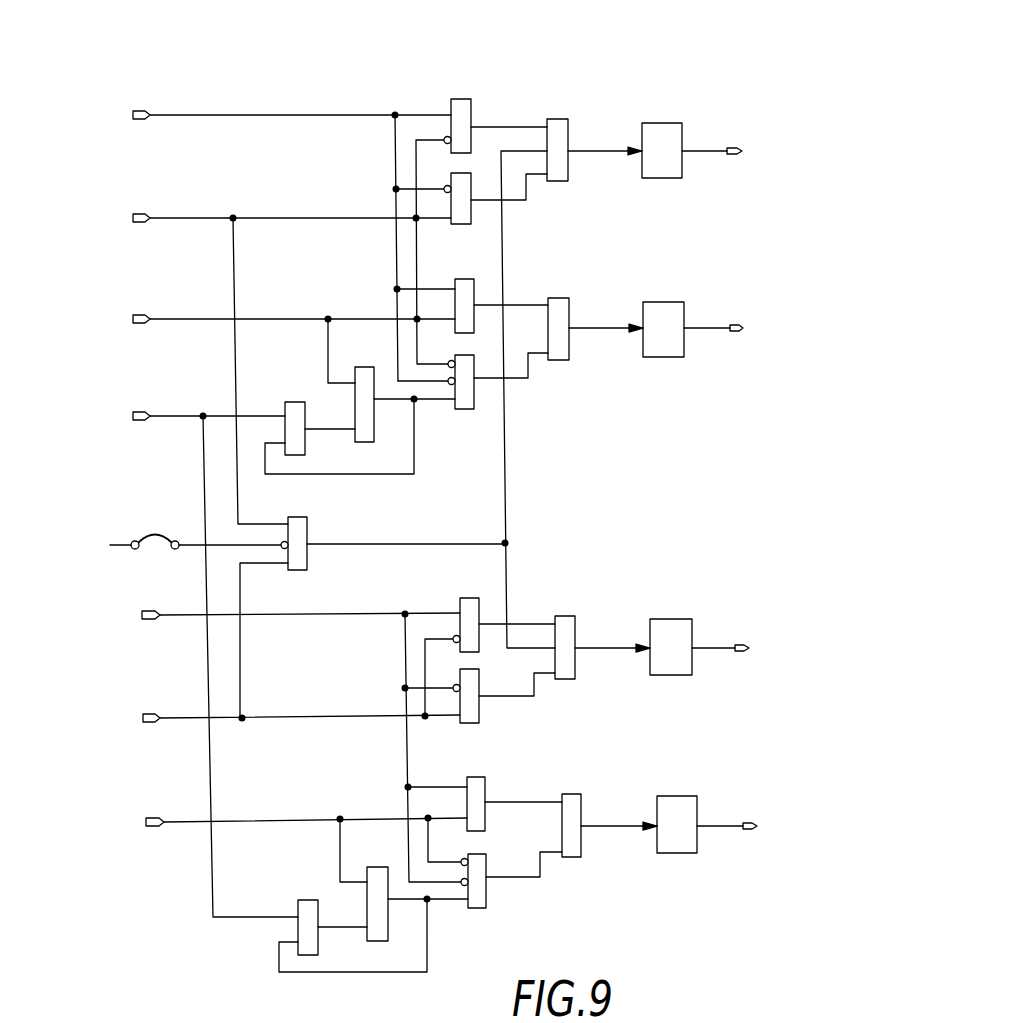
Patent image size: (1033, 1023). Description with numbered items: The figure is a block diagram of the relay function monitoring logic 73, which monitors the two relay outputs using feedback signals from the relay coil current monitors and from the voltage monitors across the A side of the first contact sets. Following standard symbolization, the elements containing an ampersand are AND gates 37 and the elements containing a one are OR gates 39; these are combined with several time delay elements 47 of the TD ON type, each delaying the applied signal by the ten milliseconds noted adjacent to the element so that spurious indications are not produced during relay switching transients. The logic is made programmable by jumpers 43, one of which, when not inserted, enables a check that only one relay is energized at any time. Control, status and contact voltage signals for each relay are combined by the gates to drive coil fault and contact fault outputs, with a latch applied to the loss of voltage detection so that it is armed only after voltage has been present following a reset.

The AND gate 37 is at (461, 99).
The OR gate 39 is at (556, 119).
The jumper 43 is at (155, 534).
The time delay element 47 is at (663, 178).
The relay function monitoring logic 73 is at (696, 488).